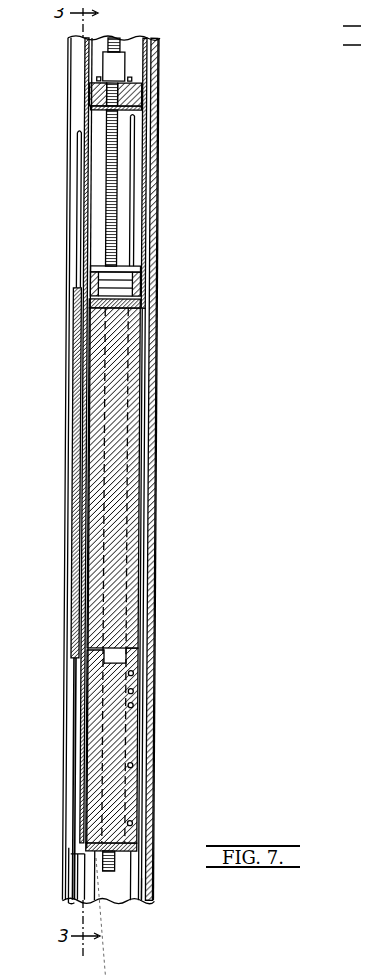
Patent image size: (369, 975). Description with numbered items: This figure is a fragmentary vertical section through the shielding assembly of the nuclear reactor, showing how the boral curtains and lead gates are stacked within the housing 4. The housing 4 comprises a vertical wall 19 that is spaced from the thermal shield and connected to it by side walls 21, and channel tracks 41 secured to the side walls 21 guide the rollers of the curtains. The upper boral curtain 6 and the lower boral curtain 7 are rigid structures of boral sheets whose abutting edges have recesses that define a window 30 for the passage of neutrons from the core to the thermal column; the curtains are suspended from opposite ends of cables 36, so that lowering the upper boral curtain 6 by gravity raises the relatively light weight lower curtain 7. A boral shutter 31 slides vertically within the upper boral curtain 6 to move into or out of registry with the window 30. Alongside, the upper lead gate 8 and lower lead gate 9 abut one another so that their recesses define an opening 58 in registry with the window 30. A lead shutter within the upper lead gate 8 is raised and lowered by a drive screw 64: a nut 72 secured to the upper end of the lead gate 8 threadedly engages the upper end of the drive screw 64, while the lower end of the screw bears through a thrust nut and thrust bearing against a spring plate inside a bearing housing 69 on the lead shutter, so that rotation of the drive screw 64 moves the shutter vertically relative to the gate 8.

The housing 4 is at (143, 762).
The boral curtain 6 is at (63, 396).
The boral curtain 7 is at (64, 773).
The lead gate 8 is at (128, 90).
The lead gate 9 is at (132, 734).
The vertical wall 19 is at (150, 798).
The side wall 21 is at (140, 882).
The window 30 is at (71, 536).
The boral shutter 31 is at (78, 566).
The cable 36 is at (72, 181).
The channel track 41 is at (70, 864).
The opening 58 is at (140, 519).
The drive screw 64 is at (105, 28).
The bearing housing 69 is at (110, 269).
The nut 72 is at (106, 56).